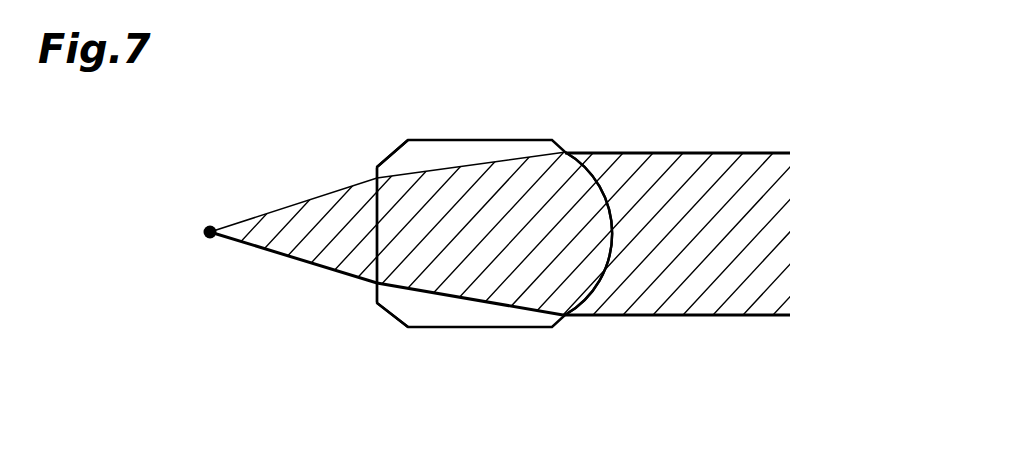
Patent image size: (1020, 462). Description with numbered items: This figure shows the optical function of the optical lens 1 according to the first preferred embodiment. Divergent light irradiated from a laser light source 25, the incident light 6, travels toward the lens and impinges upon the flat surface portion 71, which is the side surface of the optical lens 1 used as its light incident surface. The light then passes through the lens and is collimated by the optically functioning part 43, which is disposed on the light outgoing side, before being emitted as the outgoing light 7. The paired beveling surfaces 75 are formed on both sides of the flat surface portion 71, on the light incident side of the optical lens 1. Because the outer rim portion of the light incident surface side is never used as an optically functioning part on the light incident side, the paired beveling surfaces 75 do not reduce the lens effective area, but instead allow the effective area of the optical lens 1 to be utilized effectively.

The optical lens 1 is at (545, 113).
The incident light 6 is at (285, 254).
The outgoing light 7 is at (718, 315).
The laser light source 25 is at (211, 225).
The optically functioning part 43 is at (598, 283).
The flat surface portion 71 is at (373, 291).
The paired beveling surfaces 75 is at (388, 157).